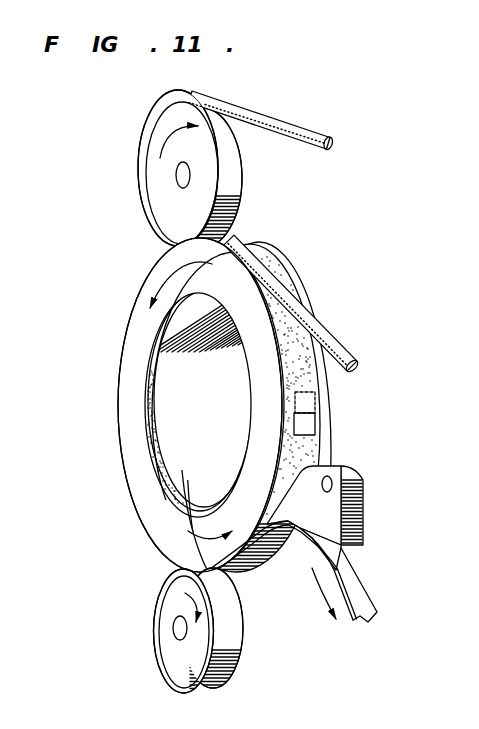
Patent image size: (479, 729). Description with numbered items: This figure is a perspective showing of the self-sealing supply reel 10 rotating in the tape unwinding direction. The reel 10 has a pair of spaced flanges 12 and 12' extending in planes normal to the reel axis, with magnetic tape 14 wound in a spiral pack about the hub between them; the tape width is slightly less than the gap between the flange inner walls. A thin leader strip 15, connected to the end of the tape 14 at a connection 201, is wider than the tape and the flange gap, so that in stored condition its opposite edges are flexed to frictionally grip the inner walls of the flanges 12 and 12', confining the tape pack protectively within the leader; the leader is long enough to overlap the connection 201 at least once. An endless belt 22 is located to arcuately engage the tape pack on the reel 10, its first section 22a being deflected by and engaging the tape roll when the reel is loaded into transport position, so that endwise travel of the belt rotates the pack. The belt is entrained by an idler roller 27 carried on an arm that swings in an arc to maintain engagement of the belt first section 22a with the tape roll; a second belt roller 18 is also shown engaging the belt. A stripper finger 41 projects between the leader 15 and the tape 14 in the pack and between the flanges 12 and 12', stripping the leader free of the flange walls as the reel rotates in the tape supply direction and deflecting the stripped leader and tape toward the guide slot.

The self-sealing supply reel 10 is at (104, 414).
The flange 12 is at (184, 405).
The flange 12' is at (267, 450).
The magnetic tape 14 is at (300, 450).
The leader strip 15 is at (290, 350).
The lower roller 18 is at (151, 663).
The endless belt 22 is at (300, 127).
The first section of the belt 22a is at (253, 250).
The idler roller 27 is at (160, 202).
The stripper finger 41 is at (323, 510).
The connection 201 is at (305, 403).